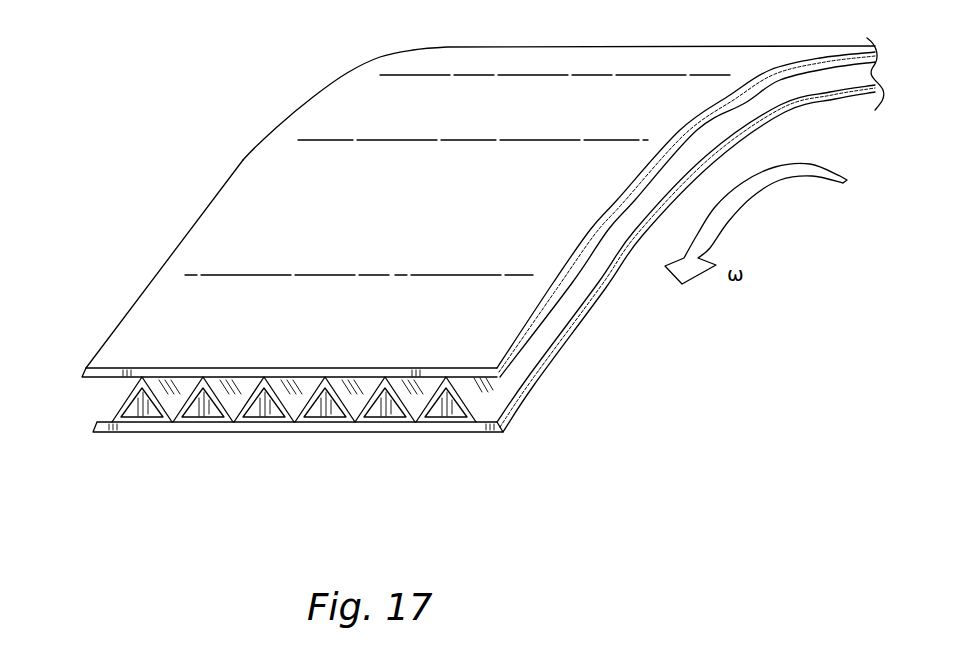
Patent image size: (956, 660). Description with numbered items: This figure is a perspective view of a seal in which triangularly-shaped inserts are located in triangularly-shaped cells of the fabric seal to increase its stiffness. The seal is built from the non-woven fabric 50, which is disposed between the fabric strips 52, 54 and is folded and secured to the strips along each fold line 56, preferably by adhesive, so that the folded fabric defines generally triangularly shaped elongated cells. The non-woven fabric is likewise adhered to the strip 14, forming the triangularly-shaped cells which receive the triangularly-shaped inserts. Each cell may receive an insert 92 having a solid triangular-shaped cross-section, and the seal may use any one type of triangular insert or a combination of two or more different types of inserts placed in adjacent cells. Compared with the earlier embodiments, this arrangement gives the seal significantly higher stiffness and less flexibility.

The strip 14 is at (133, 330).
The non-woven fabric 50 is at (475, 402).
The fabric strip 52 is at (233, 202).
The fabric strip 54 is at (243, 430).
The fold line 56 is at (203, 393).
The insert 92 is at (327, 400).